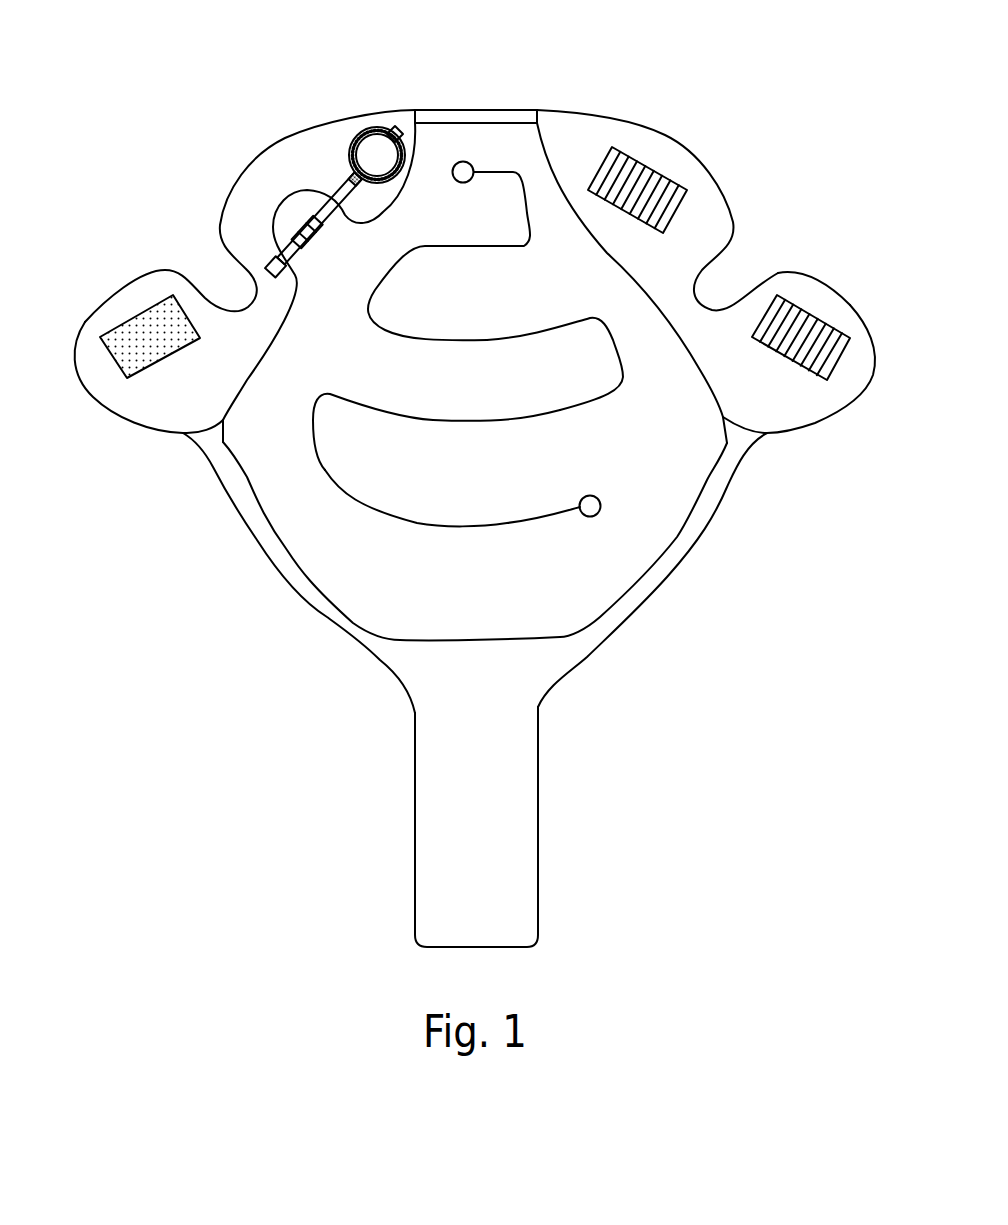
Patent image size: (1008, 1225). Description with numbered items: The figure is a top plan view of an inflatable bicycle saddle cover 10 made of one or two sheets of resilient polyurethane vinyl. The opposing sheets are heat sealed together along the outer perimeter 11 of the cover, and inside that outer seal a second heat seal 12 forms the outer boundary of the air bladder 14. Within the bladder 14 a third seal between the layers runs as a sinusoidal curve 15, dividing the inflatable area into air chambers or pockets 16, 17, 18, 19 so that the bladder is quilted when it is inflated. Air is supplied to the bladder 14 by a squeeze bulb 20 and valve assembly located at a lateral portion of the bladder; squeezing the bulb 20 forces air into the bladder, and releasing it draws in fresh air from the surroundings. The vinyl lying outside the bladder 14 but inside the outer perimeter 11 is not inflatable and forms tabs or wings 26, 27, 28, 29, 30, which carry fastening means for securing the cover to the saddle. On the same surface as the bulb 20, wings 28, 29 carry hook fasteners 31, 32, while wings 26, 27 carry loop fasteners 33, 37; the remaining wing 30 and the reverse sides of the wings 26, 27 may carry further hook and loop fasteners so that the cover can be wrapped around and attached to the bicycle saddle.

The saddle cover 10 is at (497, 110).
The outer perimeter 11 is at (690, 572).
The second heat seal 12 is at (460, 122).
The air bladder 14 is at (373, 563).
The sinusoidal curve 15 is at (420, 523).
The air chamber 16 is at (430, 463).
The air chamber 17 is at (465, 378).
The air chamber 18 is at (435, 291).
The air chamber 19 is at (491, 209).
The bulb 20 is at (368, 150).
The wing 26 is at (150, 400).
The wing 27 is at (263, 193).
The wing 28 is at (683, 233).
The wing 29 is at (818, 397).
The wing 30 is at (487, 872).
The hook fastener 31 is at (632, 177).
The hook fastener 32 is at (803, 327).
The loop fastener 33 is at (143, 330).
The loop fastener 37 is at (345, 153).